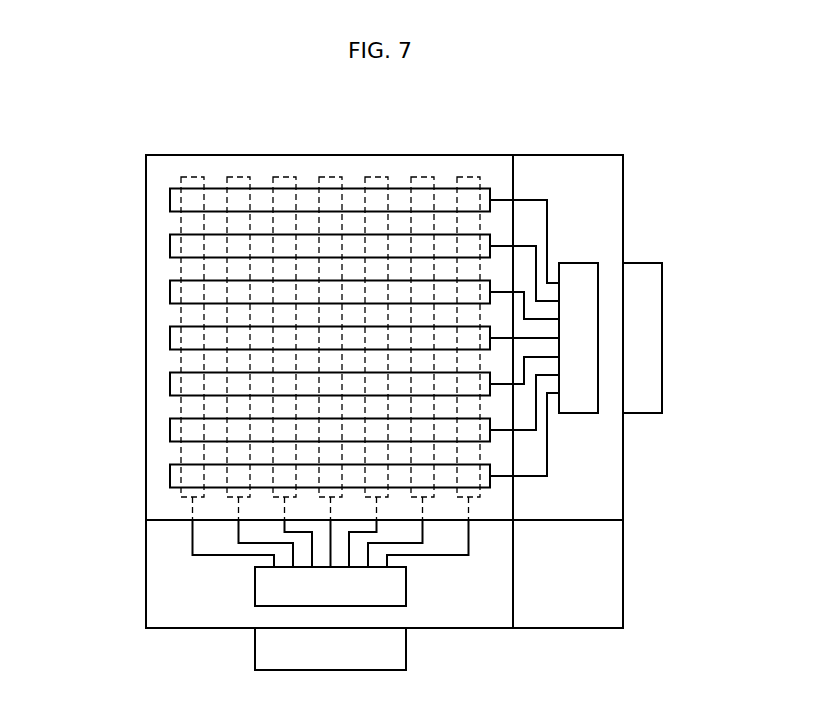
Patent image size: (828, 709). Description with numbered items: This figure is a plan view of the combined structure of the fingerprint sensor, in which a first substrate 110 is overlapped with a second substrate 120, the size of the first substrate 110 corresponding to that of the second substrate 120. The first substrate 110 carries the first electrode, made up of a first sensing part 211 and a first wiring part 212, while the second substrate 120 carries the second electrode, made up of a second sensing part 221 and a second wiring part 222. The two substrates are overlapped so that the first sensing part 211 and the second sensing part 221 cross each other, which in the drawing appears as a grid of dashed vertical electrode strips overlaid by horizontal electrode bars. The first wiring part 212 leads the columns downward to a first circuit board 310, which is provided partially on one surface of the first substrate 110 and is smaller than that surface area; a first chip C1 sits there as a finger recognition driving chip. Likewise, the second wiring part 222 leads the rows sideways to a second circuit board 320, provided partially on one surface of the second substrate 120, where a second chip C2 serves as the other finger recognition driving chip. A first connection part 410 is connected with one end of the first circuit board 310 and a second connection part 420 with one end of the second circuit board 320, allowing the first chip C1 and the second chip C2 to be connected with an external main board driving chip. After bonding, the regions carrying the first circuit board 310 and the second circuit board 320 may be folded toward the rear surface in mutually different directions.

The first substrate 110 is at (323, 391).
The second substrate 120 is at (146, 290).
The first sensing part 211 is at (190, 177).
The first wiring part 212 is at (193, 540).
The second sensing part 221 is at (170, 247).
The second wiring part 222 is at (548, 221).
The first circuit board 310 is at (146, 588).
The second circuit board 320 is at (562, 521).
The first connection part 410 is at (406, 645).
The second connection part 420 is at (663, 338).
The first chip C1 is at (255, 582).
The second chip C2 is at (585, 413).